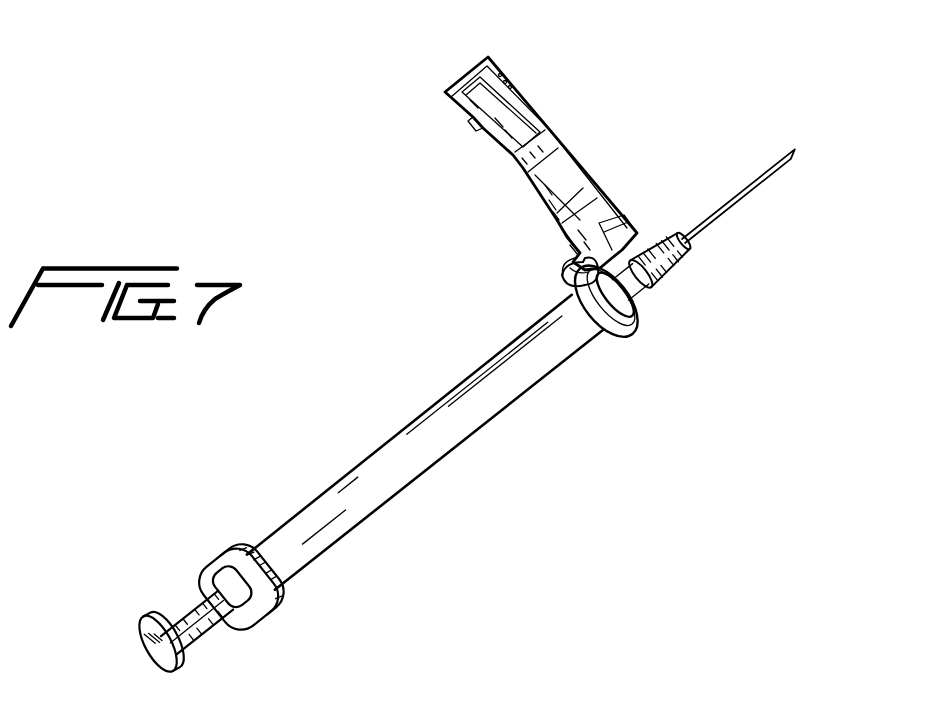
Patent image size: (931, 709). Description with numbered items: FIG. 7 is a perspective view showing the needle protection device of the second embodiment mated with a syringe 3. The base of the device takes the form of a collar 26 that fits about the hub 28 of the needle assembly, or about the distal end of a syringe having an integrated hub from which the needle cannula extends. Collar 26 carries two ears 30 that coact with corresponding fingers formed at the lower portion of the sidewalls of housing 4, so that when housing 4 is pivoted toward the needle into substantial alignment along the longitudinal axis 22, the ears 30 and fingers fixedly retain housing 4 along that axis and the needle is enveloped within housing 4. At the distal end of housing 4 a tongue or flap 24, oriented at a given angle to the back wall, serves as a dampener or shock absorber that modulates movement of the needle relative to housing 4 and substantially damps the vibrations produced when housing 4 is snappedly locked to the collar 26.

The syringe 3 is at (407, 487).
The housing 4 is at (499, 145).
The longitudinal axis 22 is at (768, 188).
The flap 24 is at (472, 120).
The collar 26 is at (573, 283).
The hub 28 is at (655, 236).
The ears 30 is at (650, 297).